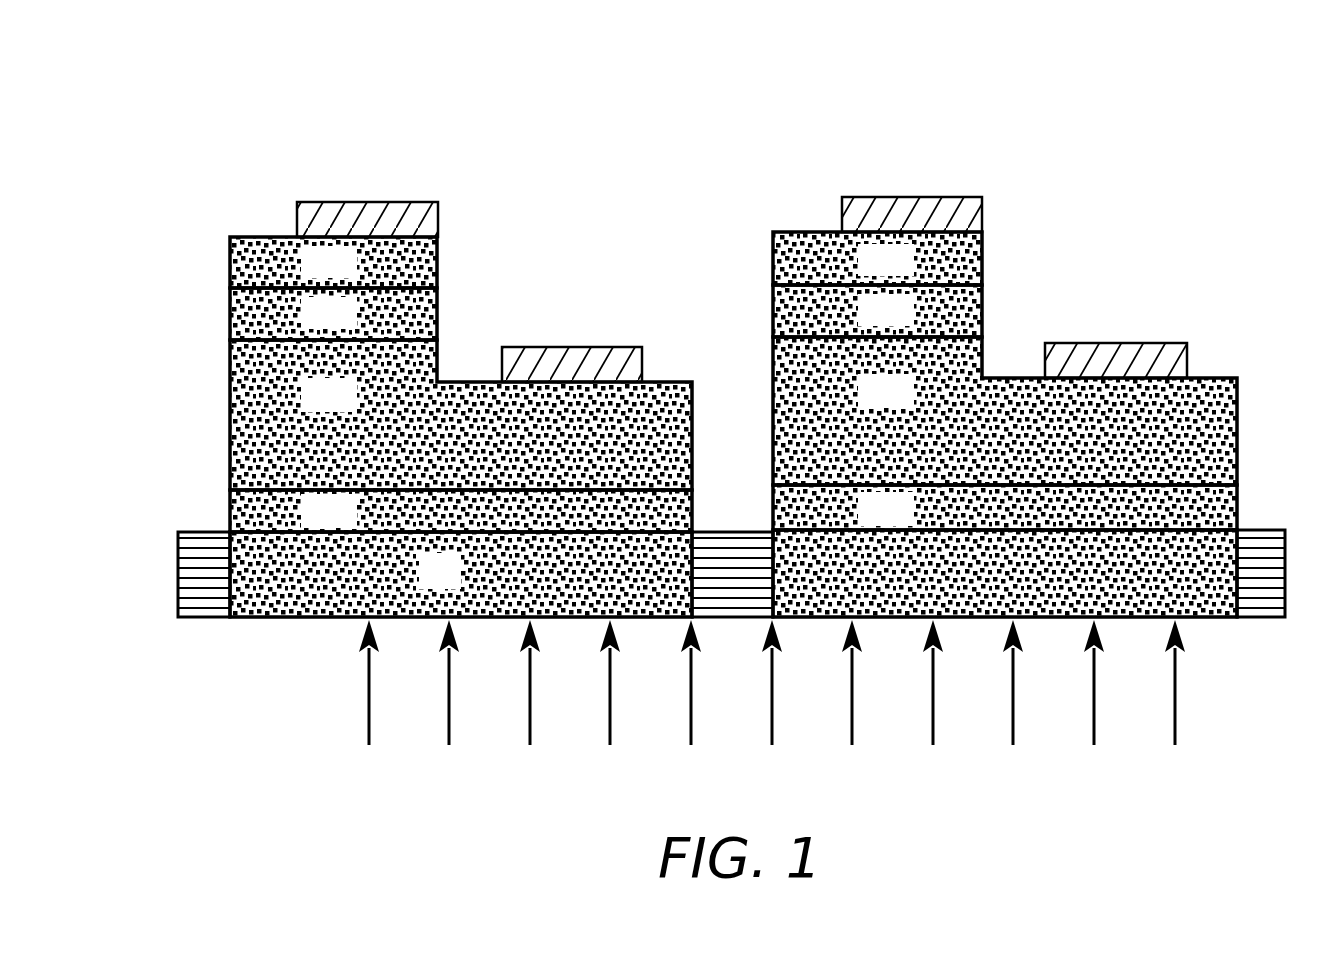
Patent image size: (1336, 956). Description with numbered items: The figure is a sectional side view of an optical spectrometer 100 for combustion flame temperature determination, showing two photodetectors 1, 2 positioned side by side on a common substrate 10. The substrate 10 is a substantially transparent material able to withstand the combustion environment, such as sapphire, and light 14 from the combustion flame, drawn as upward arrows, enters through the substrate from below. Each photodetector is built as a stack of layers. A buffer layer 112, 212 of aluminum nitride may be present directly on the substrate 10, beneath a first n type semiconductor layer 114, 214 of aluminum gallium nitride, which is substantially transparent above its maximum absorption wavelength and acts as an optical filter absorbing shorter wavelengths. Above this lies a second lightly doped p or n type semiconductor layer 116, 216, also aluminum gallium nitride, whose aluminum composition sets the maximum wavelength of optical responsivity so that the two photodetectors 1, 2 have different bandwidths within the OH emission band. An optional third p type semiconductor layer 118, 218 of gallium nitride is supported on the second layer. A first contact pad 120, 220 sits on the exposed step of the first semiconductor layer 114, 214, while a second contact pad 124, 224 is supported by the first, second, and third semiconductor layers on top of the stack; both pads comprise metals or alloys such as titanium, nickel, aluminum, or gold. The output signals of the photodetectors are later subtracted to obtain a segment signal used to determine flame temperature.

The optical spectrometer 100 is at (302, 165).
The photodetector 1 is at (578, 210).
The photodetector 2 is at (1140, 226).
The substrate 10 is at (731, 573).
The light 14 is at (1175, 682).
The buffer layer 112 is at (461, 511).
The first n type semiconductor layer 114 is at (461, 415).
The second lightly doped p or n type semiconductor layer 116 is at (333, 314).
The third p type semiconductor layer 118 is at (333, 262).
The first contact pad 120 is at (577, 348).
The second contact pad 124 is at (403, 203).
The buffer layer 212 is at (1005, 507).
The first n type semiconductor layer 214 is at (1005, 411).
The second lightly doped p or n type semiconductor layer 216 is at (877, 311).
The third p type semiconductor layer 218 is at (877, 258).
The first contact pad 220 is at (1153, 343).
The second contact pad 224 is at (967, 197).